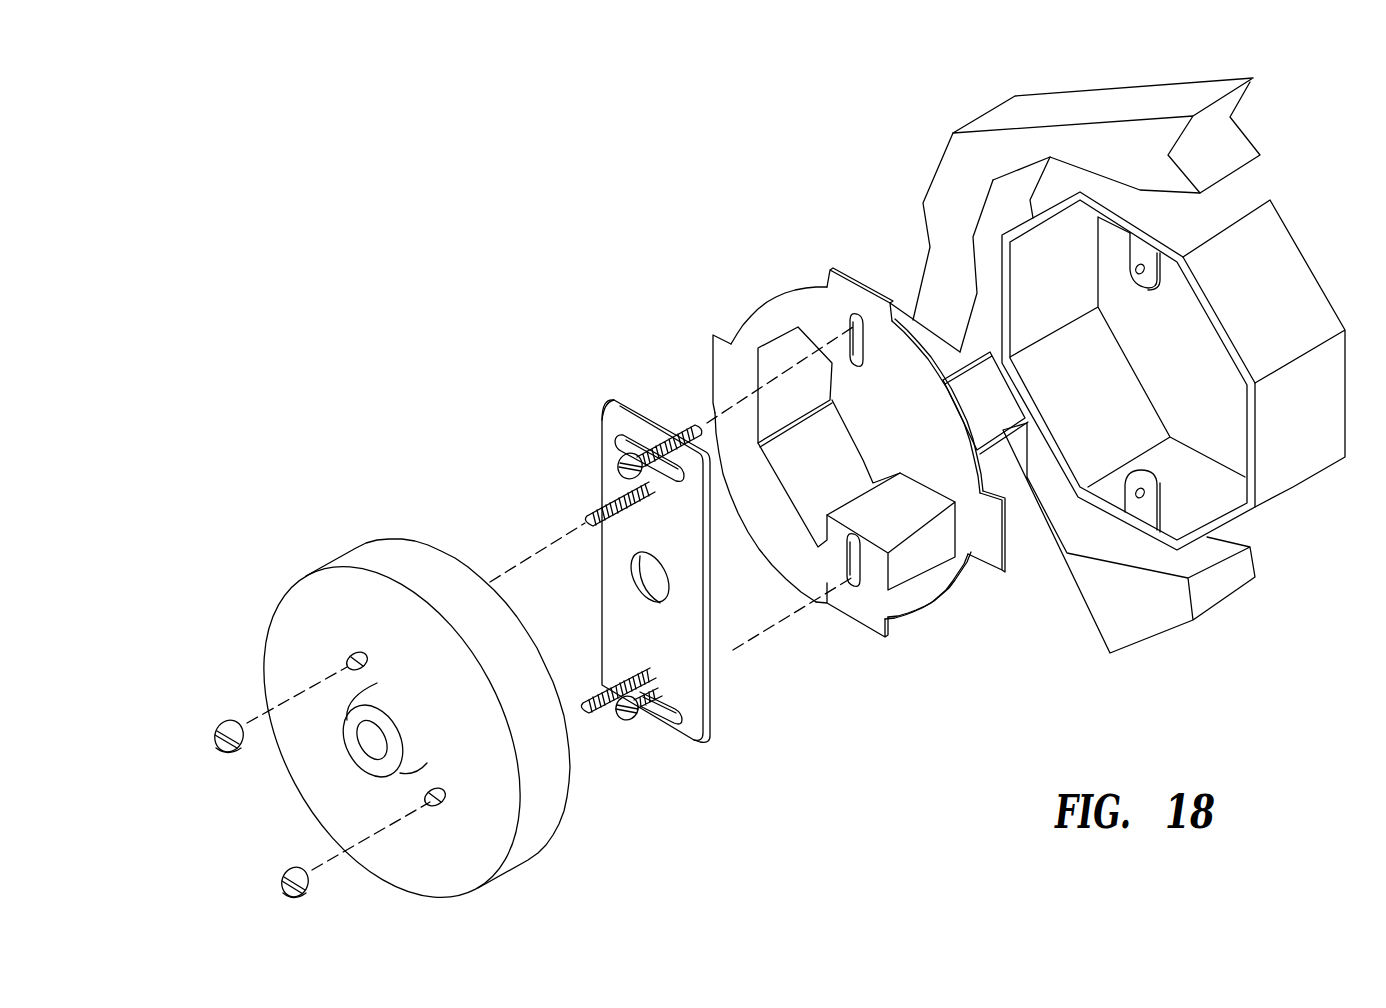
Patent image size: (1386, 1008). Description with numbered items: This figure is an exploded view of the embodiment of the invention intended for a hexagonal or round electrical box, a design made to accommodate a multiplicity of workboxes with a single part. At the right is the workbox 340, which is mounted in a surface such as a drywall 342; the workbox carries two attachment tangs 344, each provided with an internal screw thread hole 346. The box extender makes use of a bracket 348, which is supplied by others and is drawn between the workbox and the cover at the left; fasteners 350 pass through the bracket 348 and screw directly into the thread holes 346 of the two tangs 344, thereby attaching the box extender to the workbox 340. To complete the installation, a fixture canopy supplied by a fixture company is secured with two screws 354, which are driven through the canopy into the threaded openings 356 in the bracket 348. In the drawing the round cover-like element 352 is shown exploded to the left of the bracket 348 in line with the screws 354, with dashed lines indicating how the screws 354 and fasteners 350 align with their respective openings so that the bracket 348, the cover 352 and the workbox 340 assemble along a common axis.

The workbox 340 is at (1293, 488).
The drywall 342 is at (1235, 142).
The attachment tangs 344 is at (1147, 278).
The internal screw thread holes 346 is at (1134, 268).
The bracket 348 is at (692, 687).
The fasteners 350 is at (625, 462).
The round cover disc 352 is at (470, 871).
The screws 354 is at (590, 512).
The threaded opening 356 is at (655, 490).